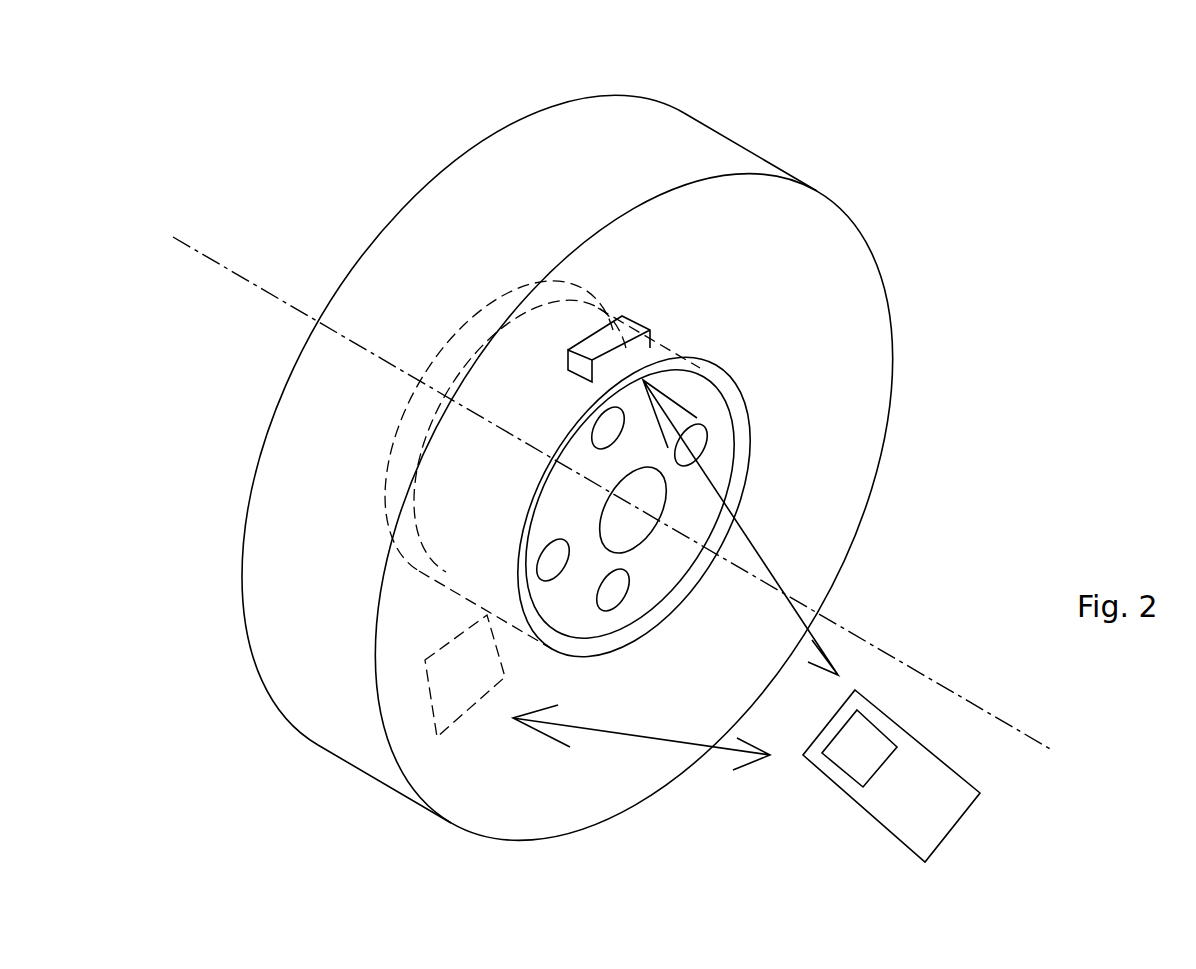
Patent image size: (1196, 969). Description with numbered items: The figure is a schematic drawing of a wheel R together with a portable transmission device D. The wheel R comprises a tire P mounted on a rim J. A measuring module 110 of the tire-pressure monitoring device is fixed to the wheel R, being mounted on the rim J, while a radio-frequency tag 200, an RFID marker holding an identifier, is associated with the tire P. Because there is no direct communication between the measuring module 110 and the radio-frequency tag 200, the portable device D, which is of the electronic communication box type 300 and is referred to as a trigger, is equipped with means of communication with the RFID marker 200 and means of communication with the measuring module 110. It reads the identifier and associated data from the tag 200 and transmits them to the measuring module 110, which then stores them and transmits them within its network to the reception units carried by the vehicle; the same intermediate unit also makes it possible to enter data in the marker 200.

The tire P is at (422, 195).
The wheel R is at (675, 116).
The rim J is at (704, 401).
The measuring module 110 is at (615, 347).
The radio-frequency tag 200 is at (440, 692).
The electronic communication box 300 is at (888, 803).
The portable device D is at (979, 783).